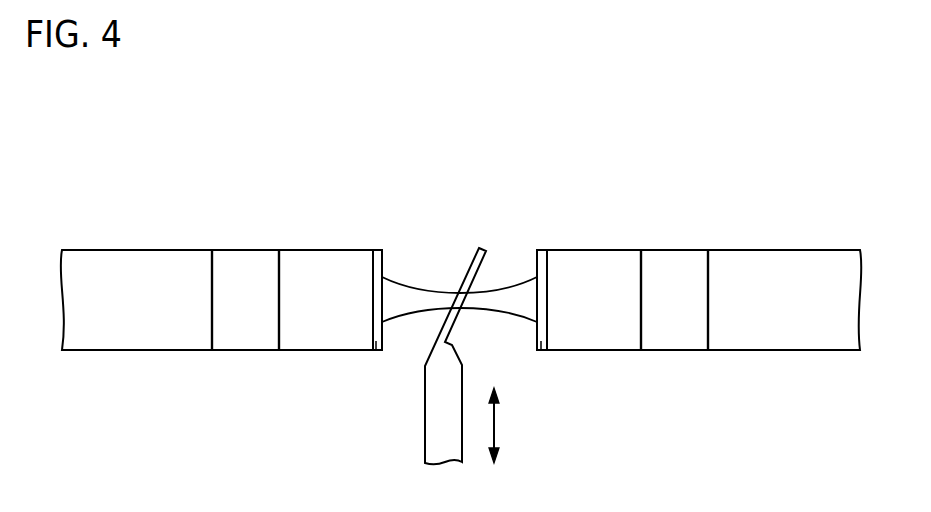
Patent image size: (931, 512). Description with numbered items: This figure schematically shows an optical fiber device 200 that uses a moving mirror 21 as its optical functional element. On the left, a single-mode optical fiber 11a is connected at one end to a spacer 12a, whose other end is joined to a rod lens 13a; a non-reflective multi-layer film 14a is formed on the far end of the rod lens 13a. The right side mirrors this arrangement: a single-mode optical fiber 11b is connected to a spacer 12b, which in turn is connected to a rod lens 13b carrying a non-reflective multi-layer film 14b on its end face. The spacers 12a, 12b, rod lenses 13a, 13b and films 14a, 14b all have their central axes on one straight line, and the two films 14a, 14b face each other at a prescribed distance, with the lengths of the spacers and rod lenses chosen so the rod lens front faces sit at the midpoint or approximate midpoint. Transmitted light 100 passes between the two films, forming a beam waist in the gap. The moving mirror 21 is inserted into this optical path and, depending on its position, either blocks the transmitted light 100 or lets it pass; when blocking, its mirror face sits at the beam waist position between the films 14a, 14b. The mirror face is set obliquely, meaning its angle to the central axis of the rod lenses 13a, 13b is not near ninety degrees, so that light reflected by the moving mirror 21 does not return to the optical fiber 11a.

The optical fiber device 200 is at (578, 127).
The single-mode optical fiber 11a is at (138, 250).
The spacer 12a is at (250, 250).
The rod lens 13a is at (355, 250).
The non-reflective multi-layer film 14a is at (376, 350).
The single-mode optical fiber 11b is at (778, 250).
The spacer 12b is at (673, 250).
The rod lens 13b is at (583, 250).
The non-reflective multi-layer film 14b is at (541, 343).
The transmitted light 100 is at (407, 283).
The moving mirror 21 is at (483, 246).